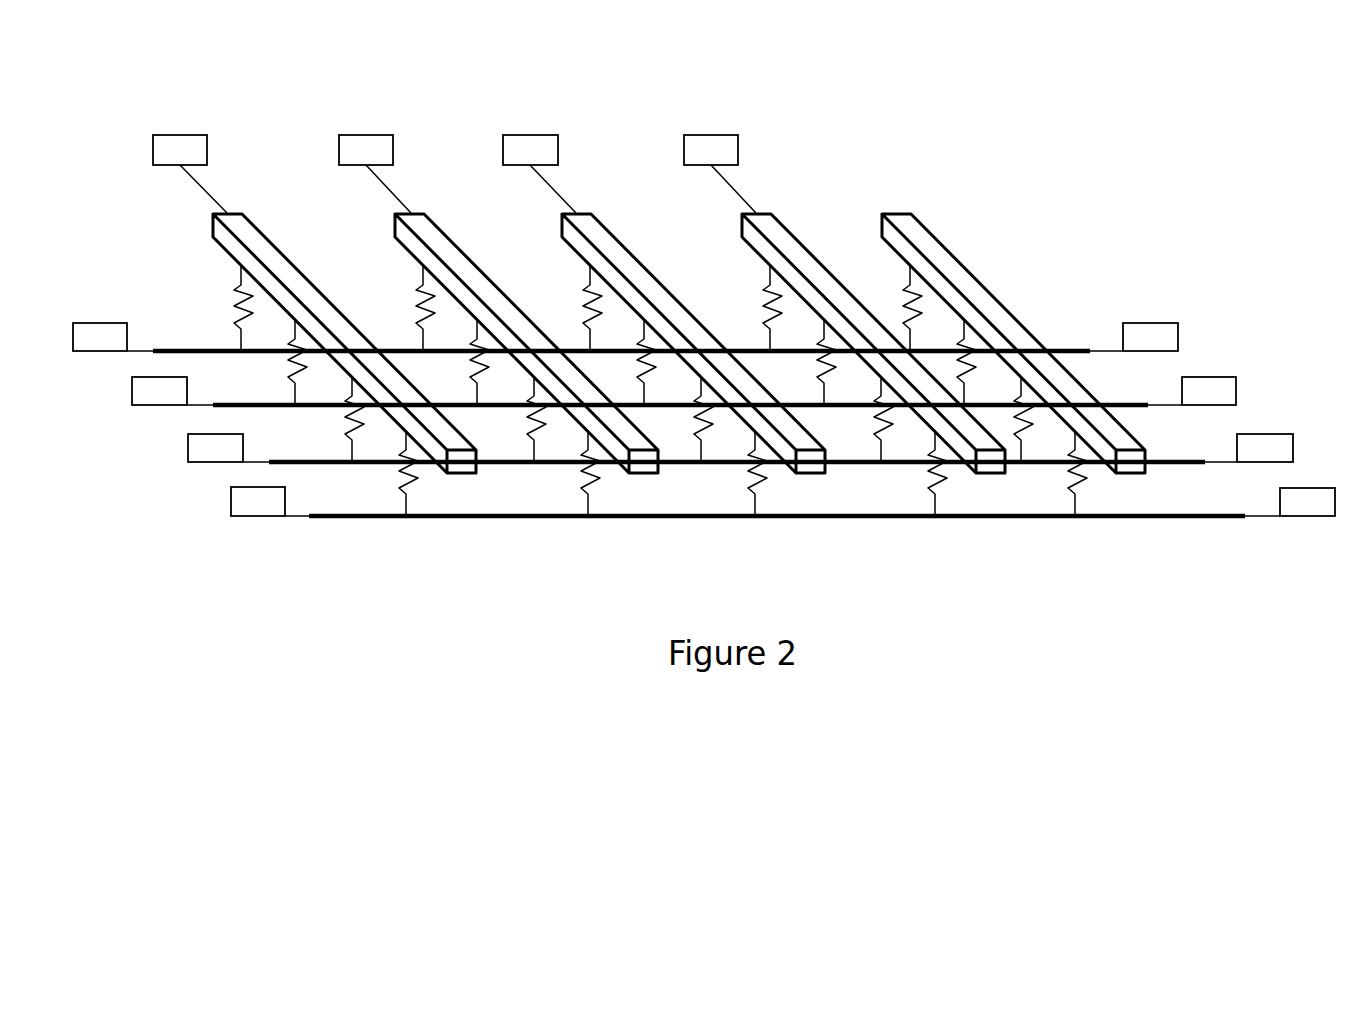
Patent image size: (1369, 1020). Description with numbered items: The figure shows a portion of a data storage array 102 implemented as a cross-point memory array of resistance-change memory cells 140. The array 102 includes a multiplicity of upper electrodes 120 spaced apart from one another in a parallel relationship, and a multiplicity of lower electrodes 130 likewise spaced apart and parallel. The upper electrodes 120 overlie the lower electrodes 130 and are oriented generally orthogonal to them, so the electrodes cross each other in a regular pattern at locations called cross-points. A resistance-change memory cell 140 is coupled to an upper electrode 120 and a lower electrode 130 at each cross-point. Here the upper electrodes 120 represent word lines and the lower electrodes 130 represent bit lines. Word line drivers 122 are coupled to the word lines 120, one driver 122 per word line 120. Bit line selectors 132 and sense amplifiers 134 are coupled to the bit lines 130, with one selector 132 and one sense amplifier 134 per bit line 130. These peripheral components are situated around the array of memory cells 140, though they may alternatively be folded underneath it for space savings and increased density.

The data storage array 102 is at (840, 79).
The upper electrode 120 is at (940, 245).
The word line driver 122 is at (713, 135).
The lower electrode 130 is at (1043, 518).
The bit line selector 132 is at (254, 517).
The sense amplifier 134 is at (1314, 517).
The resistance-change memory cell 140 is at (420, 296).